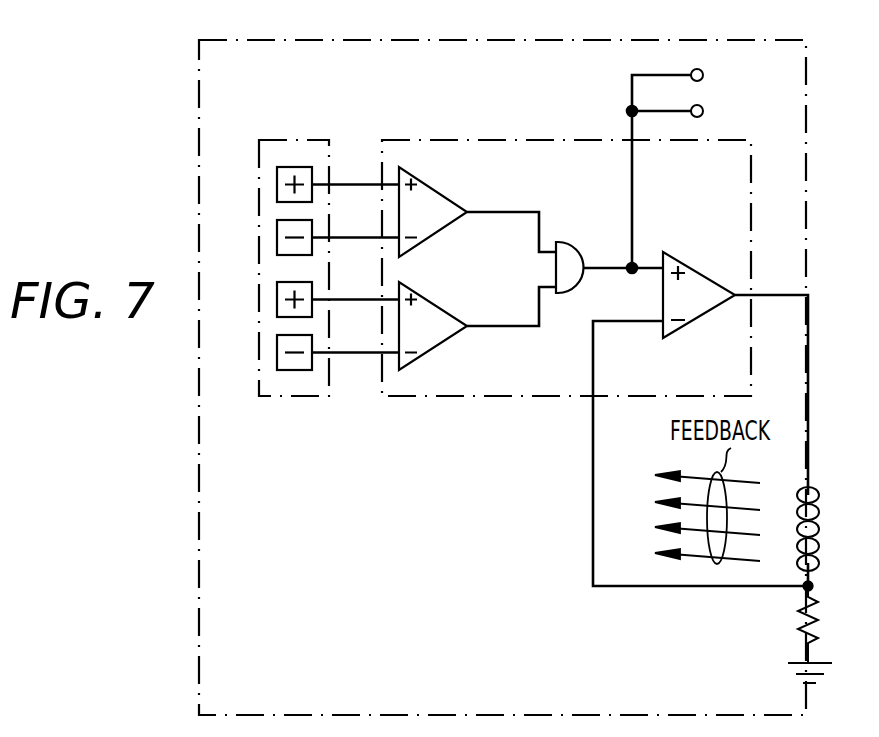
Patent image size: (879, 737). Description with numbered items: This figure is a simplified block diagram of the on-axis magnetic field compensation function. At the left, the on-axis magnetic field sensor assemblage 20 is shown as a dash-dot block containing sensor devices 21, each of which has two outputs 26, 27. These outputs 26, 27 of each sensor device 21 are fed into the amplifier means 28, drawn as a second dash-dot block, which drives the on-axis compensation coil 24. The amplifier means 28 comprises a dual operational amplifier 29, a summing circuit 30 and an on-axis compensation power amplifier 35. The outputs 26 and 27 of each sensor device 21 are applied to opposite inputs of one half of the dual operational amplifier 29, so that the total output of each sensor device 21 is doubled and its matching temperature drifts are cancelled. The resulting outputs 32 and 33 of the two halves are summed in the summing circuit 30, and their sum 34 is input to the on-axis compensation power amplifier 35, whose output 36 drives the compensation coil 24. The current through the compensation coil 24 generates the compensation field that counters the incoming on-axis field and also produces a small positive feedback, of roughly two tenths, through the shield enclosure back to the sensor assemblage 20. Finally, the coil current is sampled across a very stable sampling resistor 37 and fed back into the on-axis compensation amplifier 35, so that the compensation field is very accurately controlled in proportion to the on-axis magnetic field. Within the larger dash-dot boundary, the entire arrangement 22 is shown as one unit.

The on-axis magnetic field sensor assemblage 20 is at (277, 396).
The sensor device 21 is at (277, 168).
The control circuit 22 is at (577, 40).
The on-axis compensation coil 24 is at (823, 541).
The output of sensor device 26 is at (345, 186).
The output of sensor device 27 is at (345, 239).
The amplifier means 28 is at (467, 396).
The dual operational amplifier 29 is at (438, 231).
The summing circuit 30 is at (561, 294).
The output of dual operational amplifier 32 is at (500, 214).
The output of dual operational amplifier 33 is at (500, 328).
The sum 34 is at (598, 266).
The on-axis compensation power amplifier 35 is at (697, 272).
The output of power amplifier 36 is at (770, 294).
The sampling resistor 37 is at (800, 617).